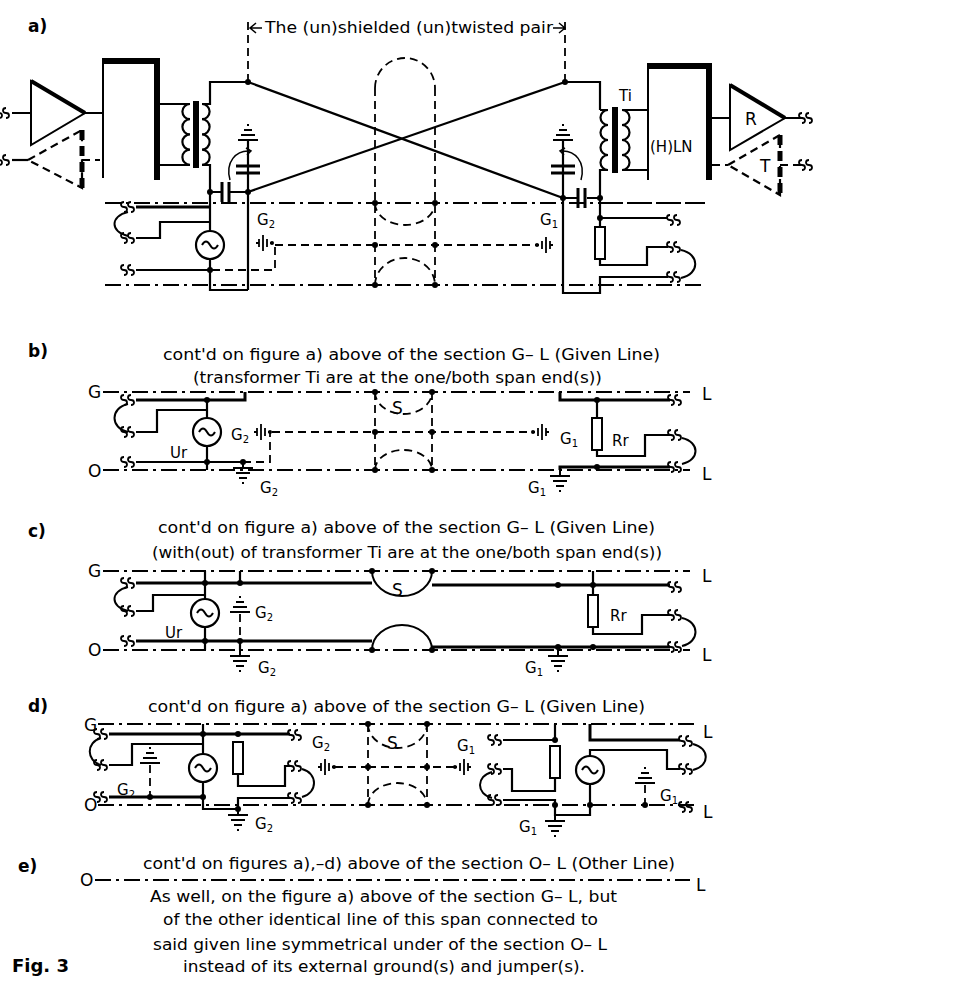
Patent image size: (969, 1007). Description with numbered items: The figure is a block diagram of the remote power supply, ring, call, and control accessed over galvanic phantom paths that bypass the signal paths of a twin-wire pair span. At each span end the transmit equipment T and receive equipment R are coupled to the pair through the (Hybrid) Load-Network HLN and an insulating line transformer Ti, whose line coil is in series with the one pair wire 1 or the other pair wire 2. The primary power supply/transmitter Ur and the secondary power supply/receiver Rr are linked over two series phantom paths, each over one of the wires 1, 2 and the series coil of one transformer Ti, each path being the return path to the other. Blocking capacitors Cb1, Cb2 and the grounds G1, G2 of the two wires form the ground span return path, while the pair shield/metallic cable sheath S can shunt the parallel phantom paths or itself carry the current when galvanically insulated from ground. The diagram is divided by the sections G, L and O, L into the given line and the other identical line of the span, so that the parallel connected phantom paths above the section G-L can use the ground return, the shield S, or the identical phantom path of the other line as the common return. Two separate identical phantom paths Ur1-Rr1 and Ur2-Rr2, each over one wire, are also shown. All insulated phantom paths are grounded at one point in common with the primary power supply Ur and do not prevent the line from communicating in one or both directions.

The one pair wire 1 is at (394, 129).
The other pair wire 2 is at (419, 127).
The transmit equipment T is at (51, 113).
The receive equipment R is at (50, 159).
The (Hybrid) Load-Network HLN is at (131, 119).
The insulating line transformer Ti is at (204, 137).
The blocking capacitor Cb1 is at (550, 164).
The blocking capacitor Cb2 is at (259, 164).
The ground of the one pair wire G1 is at (550, 138).
The ground of the other pair wire G2 is at (259, 207).
The pair shield/metallic cable sheath S is at (405, 171).
The primary power supply/transmitter Ur is at (198, 250).
The secondary power supply/receiver Rr is at (615, 243).
The primary power supply/transmitter over wire 1 Ur1 is at (188, 777).
The primary power supply/transmitter over wire 2 Ur2 is at (605, 781).
The secondary power supply/receiver over wire 1 Rr1 is at (539, 763).
The secondary power supply/receiver over wire 2 Rr2 is at (251, 760).
The section G-L G is at (397, 203).
The section O-L O is at (397, 285).
The section end L is at (663, 245).